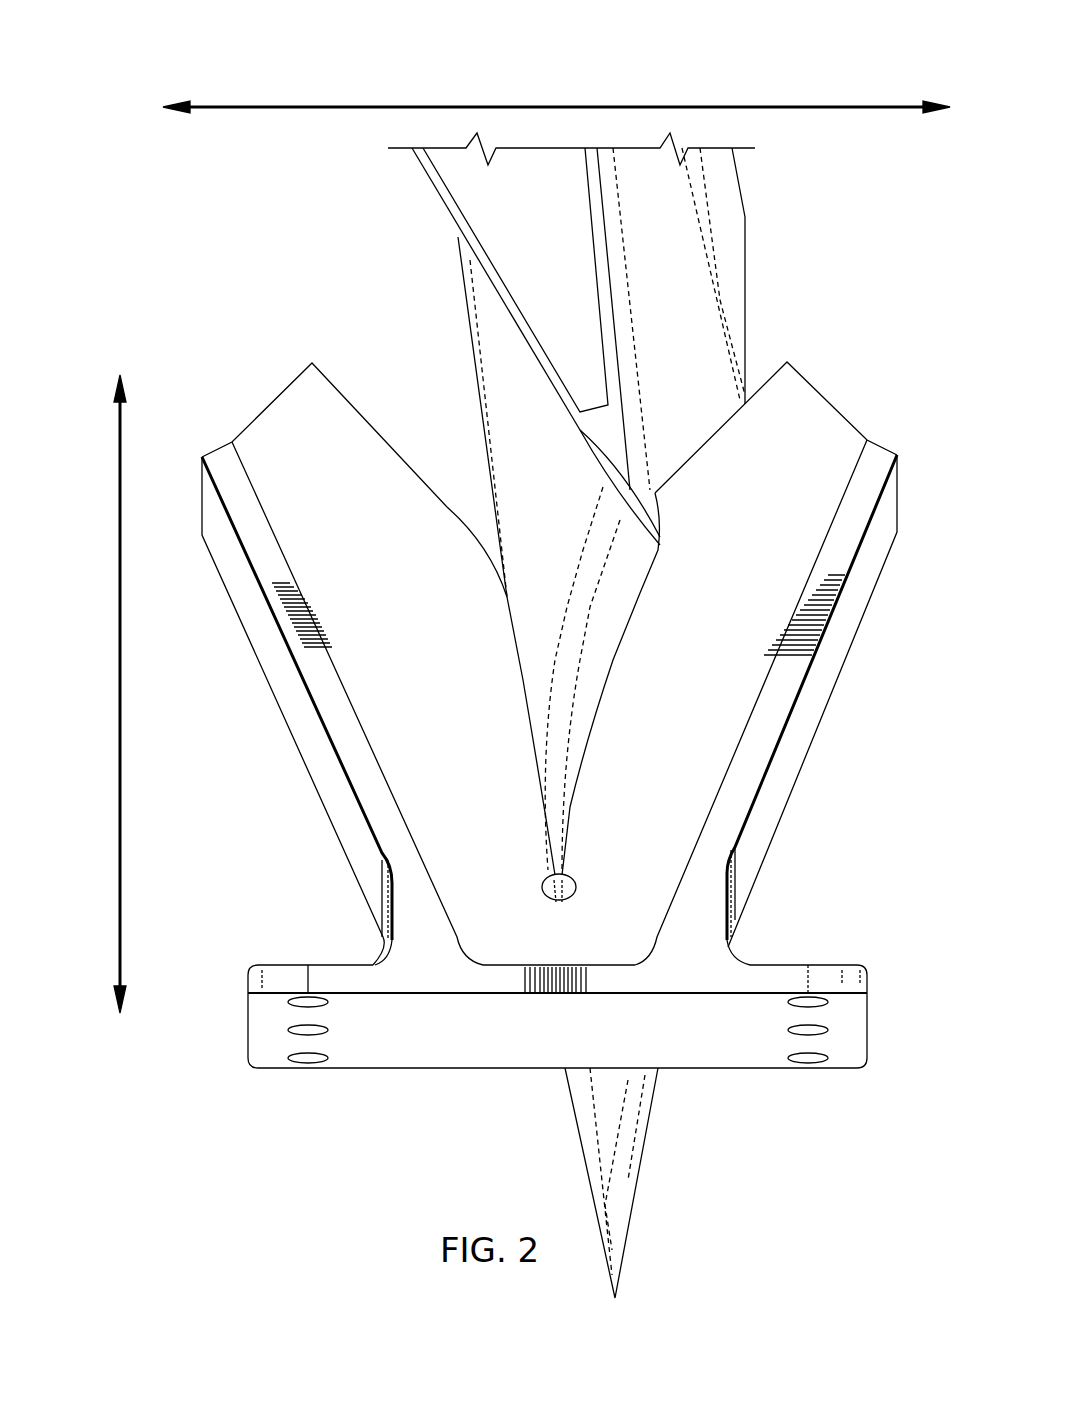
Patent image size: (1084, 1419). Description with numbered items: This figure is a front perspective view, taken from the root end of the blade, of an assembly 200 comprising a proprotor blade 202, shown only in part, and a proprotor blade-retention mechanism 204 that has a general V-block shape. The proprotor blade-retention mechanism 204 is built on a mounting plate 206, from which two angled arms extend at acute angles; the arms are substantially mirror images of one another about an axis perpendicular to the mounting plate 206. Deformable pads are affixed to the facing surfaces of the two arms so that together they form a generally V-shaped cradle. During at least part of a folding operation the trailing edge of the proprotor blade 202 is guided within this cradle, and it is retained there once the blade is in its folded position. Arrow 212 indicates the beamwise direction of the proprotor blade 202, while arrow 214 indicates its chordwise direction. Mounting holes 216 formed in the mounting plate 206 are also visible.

The assembly 200 is at (268, 68).
The proprotor blade 202 is at (747, 287).
The proprotor blade-retention mechanism 204 is at (833, 782).
The mounting plate 206 is at (868, 1030).
The arrow 212 is at (558, 105).
The arrow 214 is at (113, 697).
The mounting holes 216 is at (307, 1068).